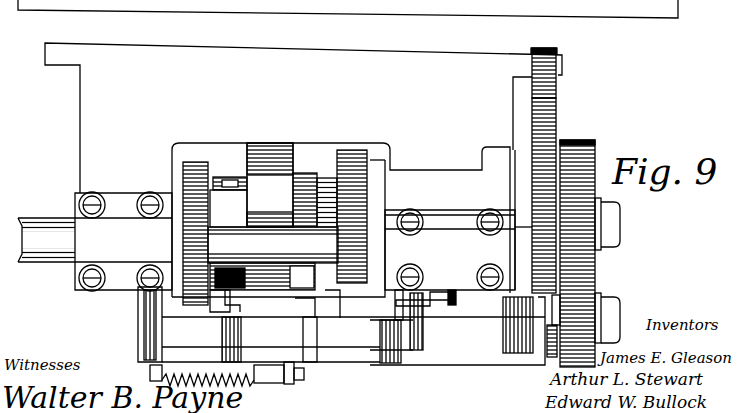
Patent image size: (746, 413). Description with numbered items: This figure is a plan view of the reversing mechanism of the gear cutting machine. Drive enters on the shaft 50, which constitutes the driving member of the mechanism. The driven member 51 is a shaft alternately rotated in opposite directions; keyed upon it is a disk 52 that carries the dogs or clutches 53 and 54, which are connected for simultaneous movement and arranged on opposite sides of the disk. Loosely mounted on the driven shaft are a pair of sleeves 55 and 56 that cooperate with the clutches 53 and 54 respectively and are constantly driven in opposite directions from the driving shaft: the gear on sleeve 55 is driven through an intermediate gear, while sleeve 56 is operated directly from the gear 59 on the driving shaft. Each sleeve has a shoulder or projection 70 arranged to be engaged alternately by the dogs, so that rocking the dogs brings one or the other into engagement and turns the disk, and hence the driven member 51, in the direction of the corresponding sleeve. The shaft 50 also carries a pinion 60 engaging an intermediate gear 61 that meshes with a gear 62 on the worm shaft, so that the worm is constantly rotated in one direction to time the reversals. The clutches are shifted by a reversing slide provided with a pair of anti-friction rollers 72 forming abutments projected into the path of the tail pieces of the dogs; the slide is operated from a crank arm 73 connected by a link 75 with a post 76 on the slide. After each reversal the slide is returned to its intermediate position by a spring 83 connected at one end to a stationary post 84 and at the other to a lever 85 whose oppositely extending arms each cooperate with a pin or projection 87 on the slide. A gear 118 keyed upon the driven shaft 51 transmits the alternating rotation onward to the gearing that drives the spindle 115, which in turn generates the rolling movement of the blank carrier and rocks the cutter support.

The shaft 50 is at (58, 252).
The driven member 51 is at (385, 218).
The disk 52 is at (270, 185).
The dog or clutch 53 is at (302, 277).
The dog or clutch 54 is at (271, 256).
The sleeve 55 is at (326, 188).
The sleeve 56 is at (213, 192).
The gear 59 is at (196, 220).
The pinion 60 is at (575, 238).
The intermediate gear 61 is at (553, 118).
The gear 62 is at (553, 85).
The shoulder or projection 70 is at (229, 178).
The anti-friction rollers 72 is at (240, 308).
The crank arm 73 is at (452, 306).
The link 75 is at (456, 296).
The post 76 is at (425, 318).
The spring 83 is at (197, 376).
The stationary post 84 is at (150, 378).
The lever 85 is at (296, 378).
The pin or projection 87 is at (256, 366).
The spindle 115 is at (596, 318).
The gear 118 is at (592, 276).